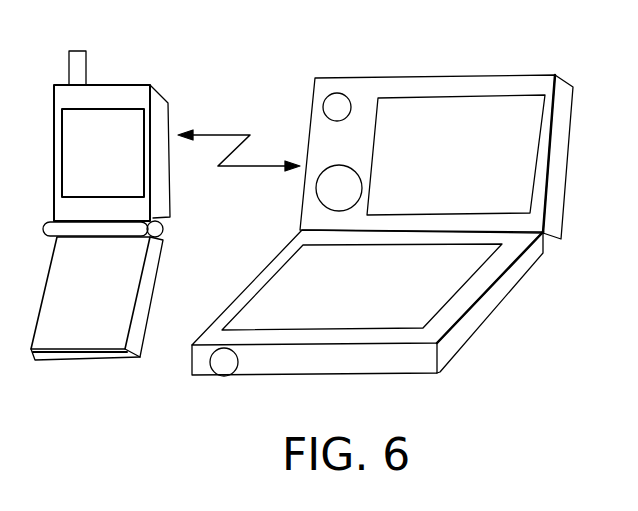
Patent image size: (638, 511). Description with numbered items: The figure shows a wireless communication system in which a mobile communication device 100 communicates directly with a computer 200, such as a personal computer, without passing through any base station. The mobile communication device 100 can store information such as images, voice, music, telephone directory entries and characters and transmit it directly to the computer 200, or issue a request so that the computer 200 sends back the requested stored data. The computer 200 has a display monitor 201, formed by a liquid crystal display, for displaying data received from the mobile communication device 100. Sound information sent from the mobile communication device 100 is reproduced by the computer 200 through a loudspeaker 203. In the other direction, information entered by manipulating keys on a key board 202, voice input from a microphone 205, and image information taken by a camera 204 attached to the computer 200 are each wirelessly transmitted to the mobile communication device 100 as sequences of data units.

The mobile communication device 100 is at (141, 84).
The computer 200 is at (415, 218).
The display monitor 201 is at (545, 118).
The key board 202 is at (465, 297).
The loudspeaker 203 is at (316, 189).
The camera 204 is at (338, 93).
The microphone 205 is at (239, 361).